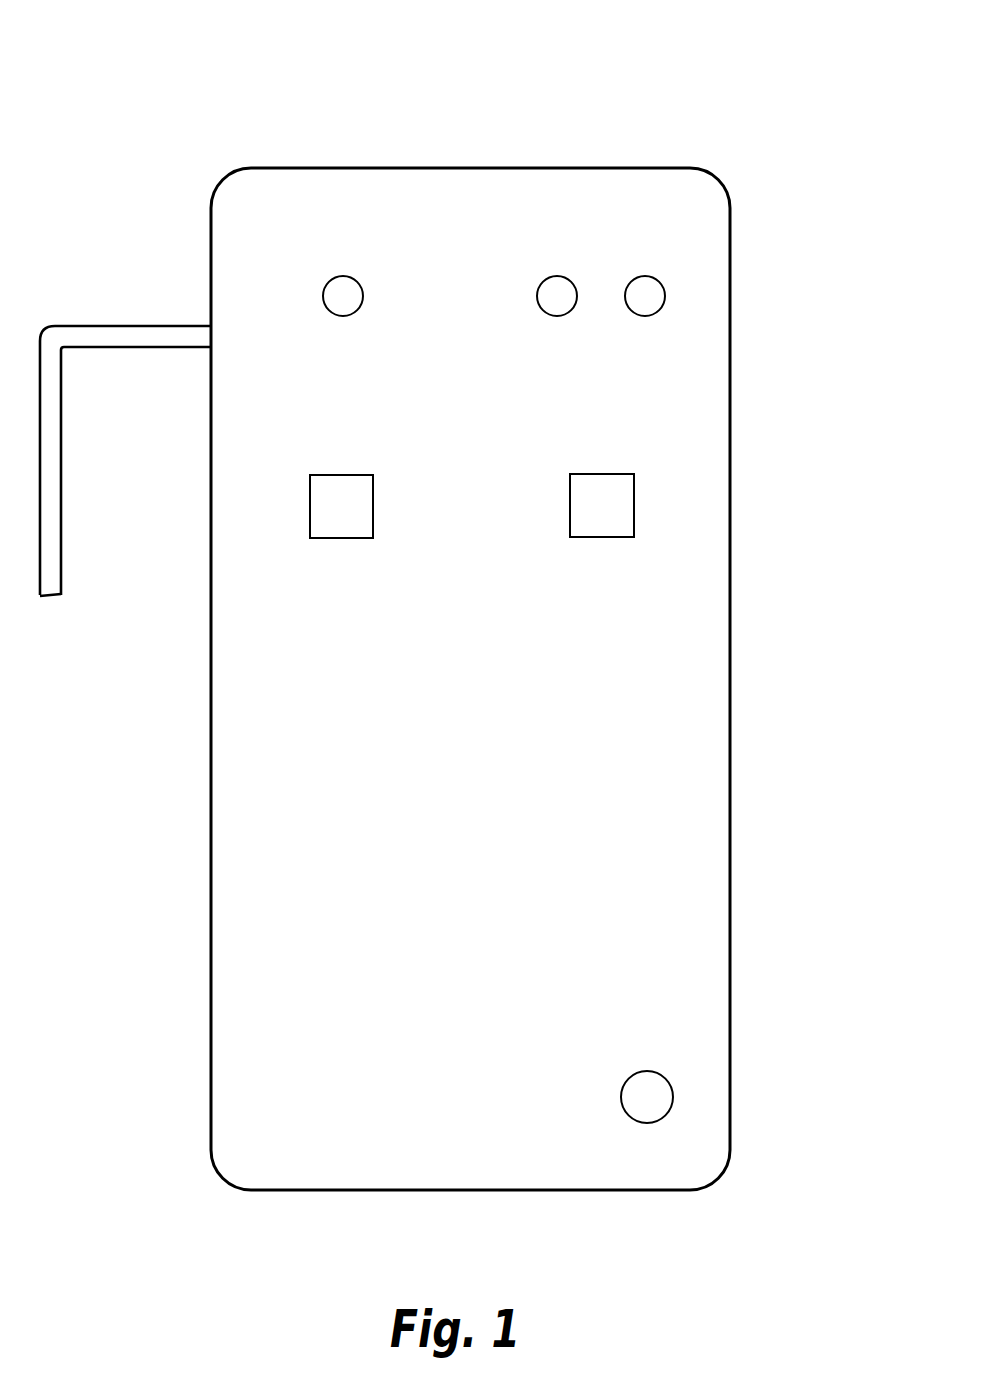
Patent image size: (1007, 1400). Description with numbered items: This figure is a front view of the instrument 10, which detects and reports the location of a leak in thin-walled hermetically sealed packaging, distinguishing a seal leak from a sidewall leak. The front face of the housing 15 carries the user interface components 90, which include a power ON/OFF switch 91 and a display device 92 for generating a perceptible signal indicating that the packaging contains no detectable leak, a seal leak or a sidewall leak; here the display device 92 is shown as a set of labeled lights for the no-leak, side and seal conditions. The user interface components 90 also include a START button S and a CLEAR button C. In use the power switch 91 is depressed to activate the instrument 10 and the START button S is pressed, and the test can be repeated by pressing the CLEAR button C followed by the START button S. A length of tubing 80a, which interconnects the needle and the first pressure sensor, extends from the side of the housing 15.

The instrument 10 is at (130, 73).
The housing 15 is at (715, 696).
The length of tubing interconnecting the needle and the first pressure sensor 80a is at (100, 338).
The user interface components 90 is at (646, 1058).
The power button 91 is at (673, 1097).
The display device 92 is at (493, 297).